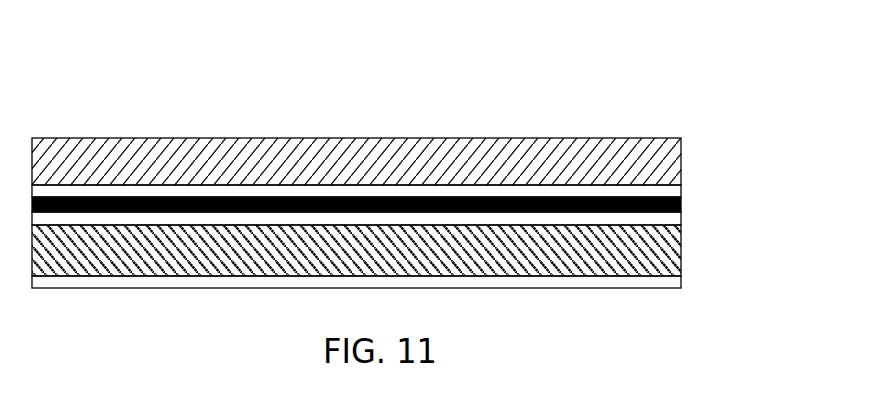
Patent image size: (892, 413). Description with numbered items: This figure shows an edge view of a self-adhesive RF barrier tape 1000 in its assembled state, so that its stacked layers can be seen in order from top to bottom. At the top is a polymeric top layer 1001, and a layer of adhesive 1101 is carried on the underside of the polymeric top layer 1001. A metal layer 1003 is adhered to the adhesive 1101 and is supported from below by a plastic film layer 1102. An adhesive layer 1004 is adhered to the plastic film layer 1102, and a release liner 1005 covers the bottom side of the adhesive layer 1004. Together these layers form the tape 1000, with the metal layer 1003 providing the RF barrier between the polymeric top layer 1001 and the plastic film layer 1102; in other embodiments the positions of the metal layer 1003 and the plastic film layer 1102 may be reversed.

The self-adhesive RF barrier tape 1000 is at (103, 110).
The polymeric top layer 1001 is at (658, 148).
The adhesive 1101 is at (681, 193).
The metal layer 1003 is at (680, 204).
The plastic film layer 1102 is at (676, 218).
The adhesive layer 1004 is at (672, 248).
The release liner 1005 is at (673, 282).